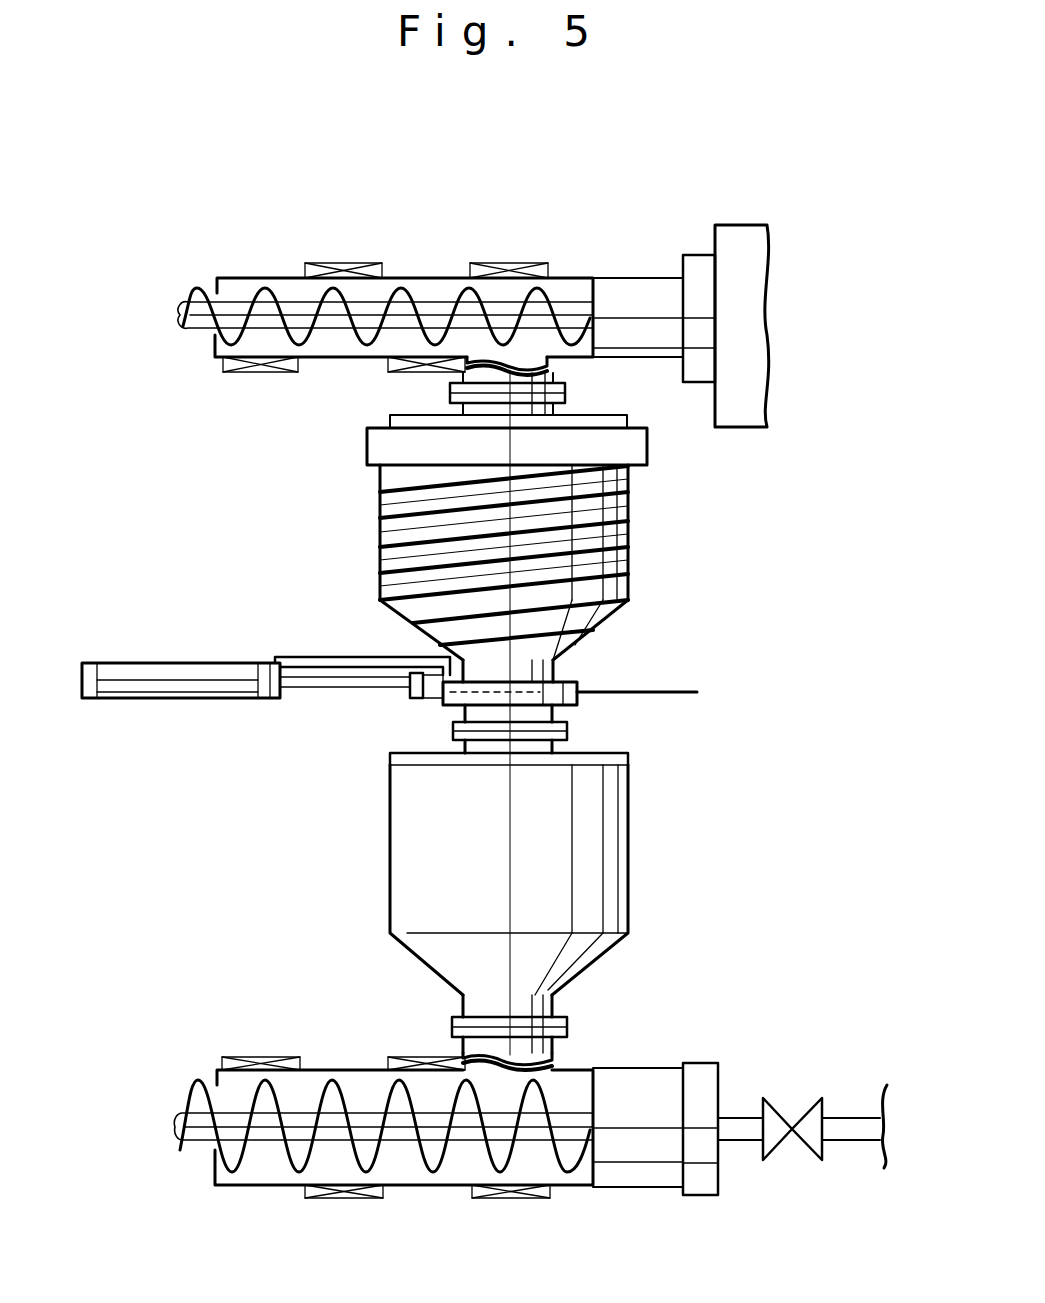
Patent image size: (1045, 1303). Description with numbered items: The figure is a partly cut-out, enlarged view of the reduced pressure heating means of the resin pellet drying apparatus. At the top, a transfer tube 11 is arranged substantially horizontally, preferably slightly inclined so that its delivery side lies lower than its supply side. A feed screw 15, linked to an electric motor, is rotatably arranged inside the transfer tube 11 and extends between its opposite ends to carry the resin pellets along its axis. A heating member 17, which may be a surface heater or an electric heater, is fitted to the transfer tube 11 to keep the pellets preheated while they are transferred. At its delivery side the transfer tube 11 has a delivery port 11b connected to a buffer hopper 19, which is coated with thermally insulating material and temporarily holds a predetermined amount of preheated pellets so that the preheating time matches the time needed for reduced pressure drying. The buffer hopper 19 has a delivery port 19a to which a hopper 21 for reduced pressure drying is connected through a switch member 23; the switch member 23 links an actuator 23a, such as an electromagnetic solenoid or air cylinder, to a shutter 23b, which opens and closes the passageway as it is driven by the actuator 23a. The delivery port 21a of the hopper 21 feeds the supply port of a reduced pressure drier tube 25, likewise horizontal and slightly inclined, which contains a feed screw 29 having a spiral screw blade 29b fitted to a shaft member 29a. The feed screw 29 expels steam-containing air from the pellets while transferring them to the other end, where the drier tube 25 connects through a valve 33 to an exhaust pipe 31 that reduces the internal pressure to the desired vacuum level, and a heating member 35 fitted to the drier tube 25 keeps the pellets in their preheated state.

The transfer tube 11 is at (220, 277).
The delivery port 11b is at (553, 378).
The feed screw 15 is at (263, 320).
The heating member 17 is at (362, 270).
The buffer hopper 19 is at (630, 532).
The delivery port 19a is at (527, 667).
The hopper for reduced pressure drying 21 is at (630, 857).
The delivery port 21a is at (527, 1005).
The switch member 23 is at (285, 655).
The actuator 23a is at (220, 685).
The shutter 23b is at (653, 690).
The reduced pressure drier tube 25 is at (330, 1068).
The feed screw 29 is at (383, 1171).
The shaft member 29a is at (530, 1128).
The screw blade 29b is at (295, 1153).
The exhaust pipe 31 is at (842, 1127).
The valve 33 is at (770, 1130).
The heating member 35 is at (247, 1055).